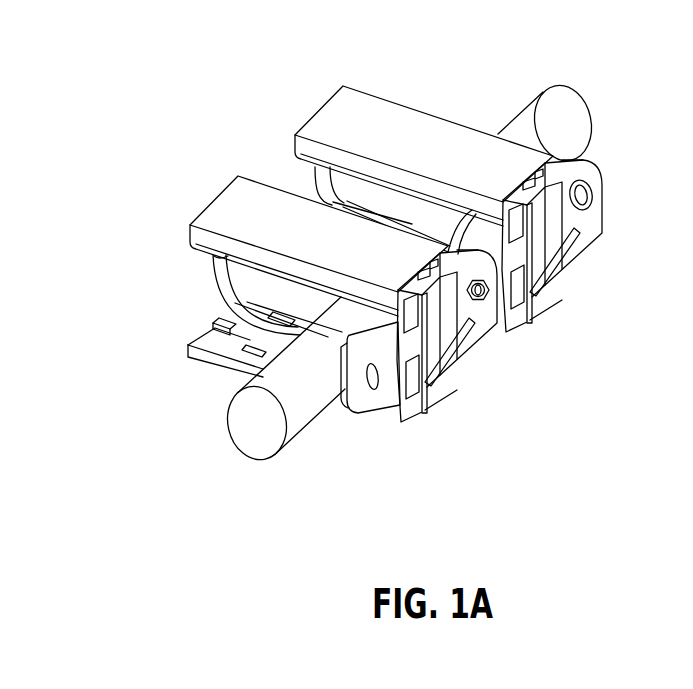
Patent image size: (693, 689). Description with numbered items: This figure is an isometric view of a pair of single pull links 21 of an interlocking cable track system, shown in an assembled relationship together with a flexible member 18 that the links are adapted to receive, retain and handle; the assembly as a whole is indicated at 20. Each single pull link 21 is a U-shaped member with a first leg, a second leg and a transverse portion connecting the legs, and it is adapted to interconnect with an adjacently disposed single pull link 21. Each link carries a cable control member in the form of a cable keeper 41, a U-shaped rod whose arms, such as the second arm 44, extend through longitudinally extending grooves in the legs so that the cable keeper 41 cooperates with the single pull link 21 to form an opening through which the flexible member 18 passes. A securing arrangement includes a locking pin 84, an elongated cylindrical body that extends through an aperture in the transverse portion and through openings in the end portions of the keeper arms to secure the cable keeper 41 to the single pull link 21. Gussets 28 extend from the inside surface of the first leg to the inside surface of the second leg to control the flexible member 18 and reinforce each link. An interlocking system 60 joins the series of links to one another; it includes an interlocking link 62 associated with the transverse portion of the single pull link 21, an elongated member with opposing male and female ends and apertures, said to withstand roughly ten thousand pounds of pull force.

The turbine blade shaft assembly 20 is at (160, 81).
The single pull link 21 is at (329, 247).
The cable keeper 41 is at (220, 290).
The second arm 44 is at (217, 322).
The gussets 28 is at (262, 348).
The flexible member 18 is at (288, 398).
The interlocking system 60 is at (505, 315).
The interlocking link 62 is at (397, 410).
The locking pin 84 is at (430, 348).